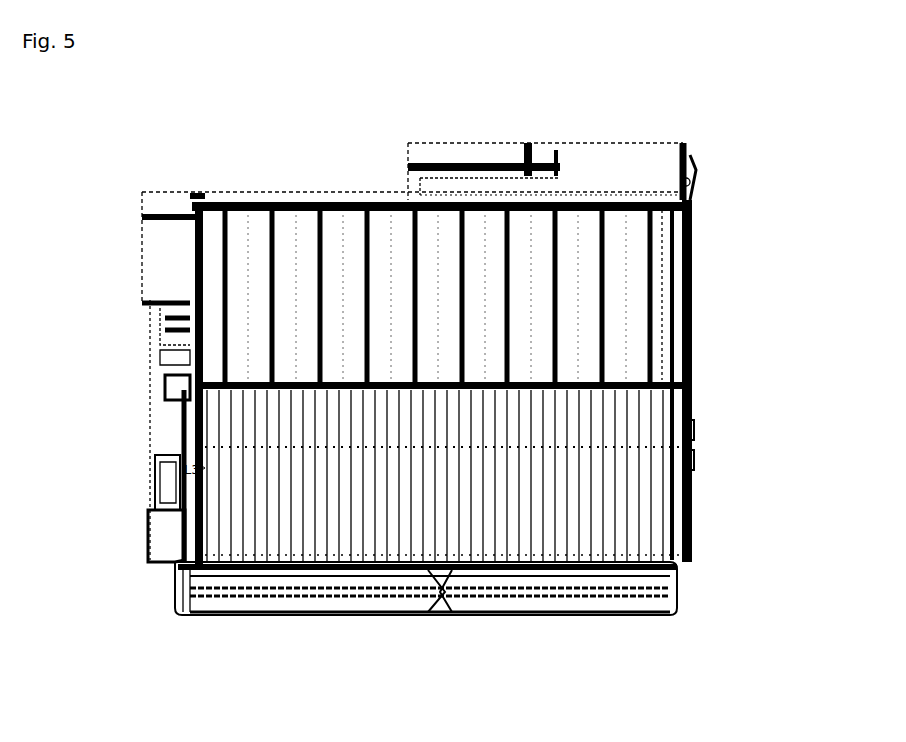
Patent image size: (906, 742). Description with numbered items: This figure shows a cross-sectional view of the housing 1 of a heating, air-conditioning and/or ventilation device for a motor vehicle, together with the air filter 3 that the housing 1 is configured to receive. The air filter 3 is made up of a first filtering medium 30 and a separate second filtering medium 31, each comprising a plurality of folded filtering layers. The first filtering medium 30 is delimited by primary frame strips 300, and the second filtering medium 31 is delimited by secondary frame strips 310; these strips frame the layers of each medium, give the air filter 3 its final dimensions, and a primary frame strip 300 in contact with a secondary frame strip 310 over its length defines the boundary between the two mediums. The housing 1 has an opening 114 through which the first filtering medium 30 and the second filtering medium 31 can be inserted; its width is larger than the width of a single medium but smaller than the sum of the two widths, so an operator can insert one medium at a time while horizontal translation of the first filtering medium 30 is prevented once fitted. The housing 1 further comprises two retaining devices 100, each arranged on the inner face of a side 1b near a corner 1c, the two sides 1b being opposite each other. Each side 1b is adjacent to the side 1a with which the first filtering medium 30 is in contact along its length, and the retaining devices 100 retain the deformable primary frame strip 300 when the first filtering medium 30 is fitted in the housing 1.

The housing 1 is at (690, 382).
The side 1a is at (300, 192).
The side 1b is at (190, 285).
The corner 1c is at (196, 196).
The air filter 3 is at (500, 476).
The first filtering medium 30 is at (688, 388).
The second filtering medium 31 is at (612, 500).
The retaining device 100 is at (200, 212).
The opening 114 is at (153, 447).
The primary frame strip 300 is at (492, 202).
The secondary frame strip 310 is at (310, 610).